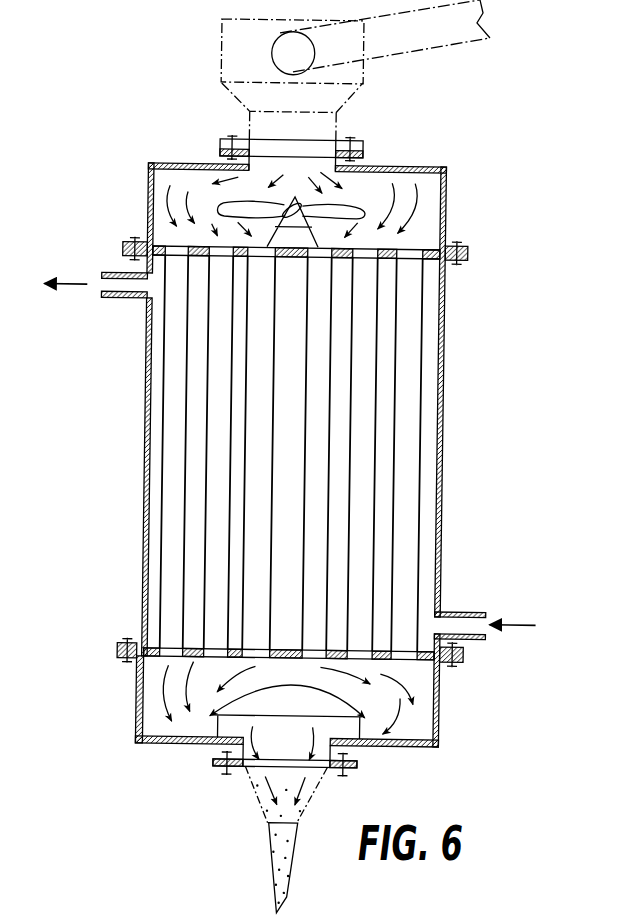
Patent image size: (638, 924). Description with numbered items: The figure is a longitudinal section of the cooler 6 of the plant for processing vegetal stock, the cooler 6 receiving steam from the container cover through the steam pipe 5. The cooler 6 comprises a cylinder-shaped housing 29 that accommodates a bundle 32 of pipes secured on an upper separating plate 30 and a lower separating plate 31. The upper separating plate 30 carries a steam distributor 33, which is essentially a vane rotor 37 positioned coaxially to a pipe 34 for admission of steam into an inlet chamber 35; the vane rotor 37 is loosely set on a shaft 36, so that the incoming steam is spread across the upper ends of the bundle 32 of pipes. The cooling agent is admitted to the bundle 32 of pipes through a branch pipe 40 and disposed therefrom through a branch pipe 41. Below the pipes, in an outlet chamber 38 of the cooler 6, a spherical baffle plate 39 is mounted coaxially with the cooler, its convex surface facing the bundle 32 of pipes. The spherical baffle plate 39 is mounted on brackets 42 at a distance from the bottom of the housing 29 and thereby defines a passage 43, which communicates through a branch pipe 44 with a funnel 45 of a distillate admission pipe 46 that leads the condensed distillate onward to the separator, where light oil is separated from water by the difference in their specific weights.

The steam pipe 5 is at (420, 38).
The cooler 6 is at (138, 423).
The housing 29 is at (443, 340).
The upper separating plate 30 is at (382, 257).
The lower separating plate 31 is at (197, 650).
The bundle of pipes 32 is at (365, 410).
The steam distributor 33 is at (219, 204).
The pipe for admission of steam 34 is at (353, 153).
The inlet chamber 35 is at (445, 187).
The shaft 36 is at (322, 243).
The vane rotor 37 is at (347, 207).
The outlet chamber 38 is at (435, 688).
The spherical baffle plate 39 is at (243, 705).
The branch pipe 40 is at (467, 610).
The branch pipe 41 is at (117, 274).
The brackets 42 is at (226, 708).
The passage 43 is at (266, 777).
The branch pipe 44 is at (357, 765).
The funnel 45 is at (268, 810).
The distillate admission pipe 46 is at (272, 865).